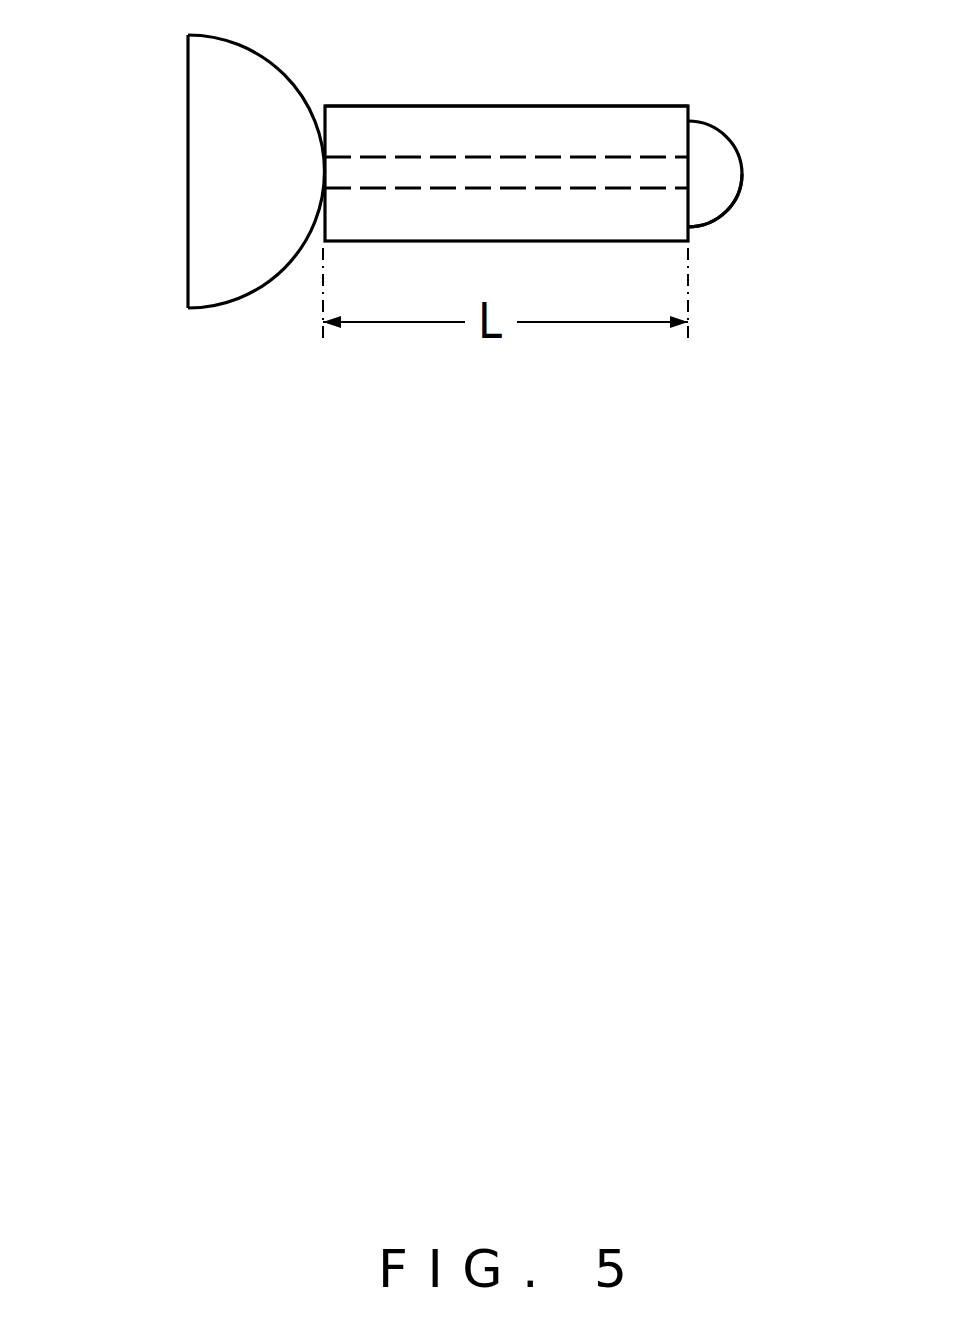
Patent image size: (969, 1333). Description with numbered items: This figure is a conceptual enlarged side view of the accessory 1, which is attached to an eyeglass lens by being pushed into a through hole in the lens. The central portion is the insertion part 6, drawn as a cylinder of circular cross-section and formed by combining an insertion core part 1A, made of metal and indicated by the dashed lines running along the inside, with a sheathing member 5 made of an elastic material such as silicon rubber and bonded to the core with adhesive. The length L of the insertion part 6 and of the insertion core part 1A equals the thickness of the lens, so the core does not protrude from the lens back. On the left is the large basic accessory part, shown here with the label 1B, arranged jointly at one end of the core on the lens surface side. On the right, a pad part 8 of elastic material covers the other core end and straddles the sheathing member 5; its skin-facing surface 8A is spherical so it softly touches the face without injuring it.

The accessory 1 is at (186, 171).
The insertion core part 1A is at (585, 168).
The semicircular lens portion 1B is at (217, 123).
The sheathing member 5 is at (433, 137).
The insertion part 6 is at (540, 100).
The pad part 8 is at (710, 157).
The surface 8A is at (740, 193).